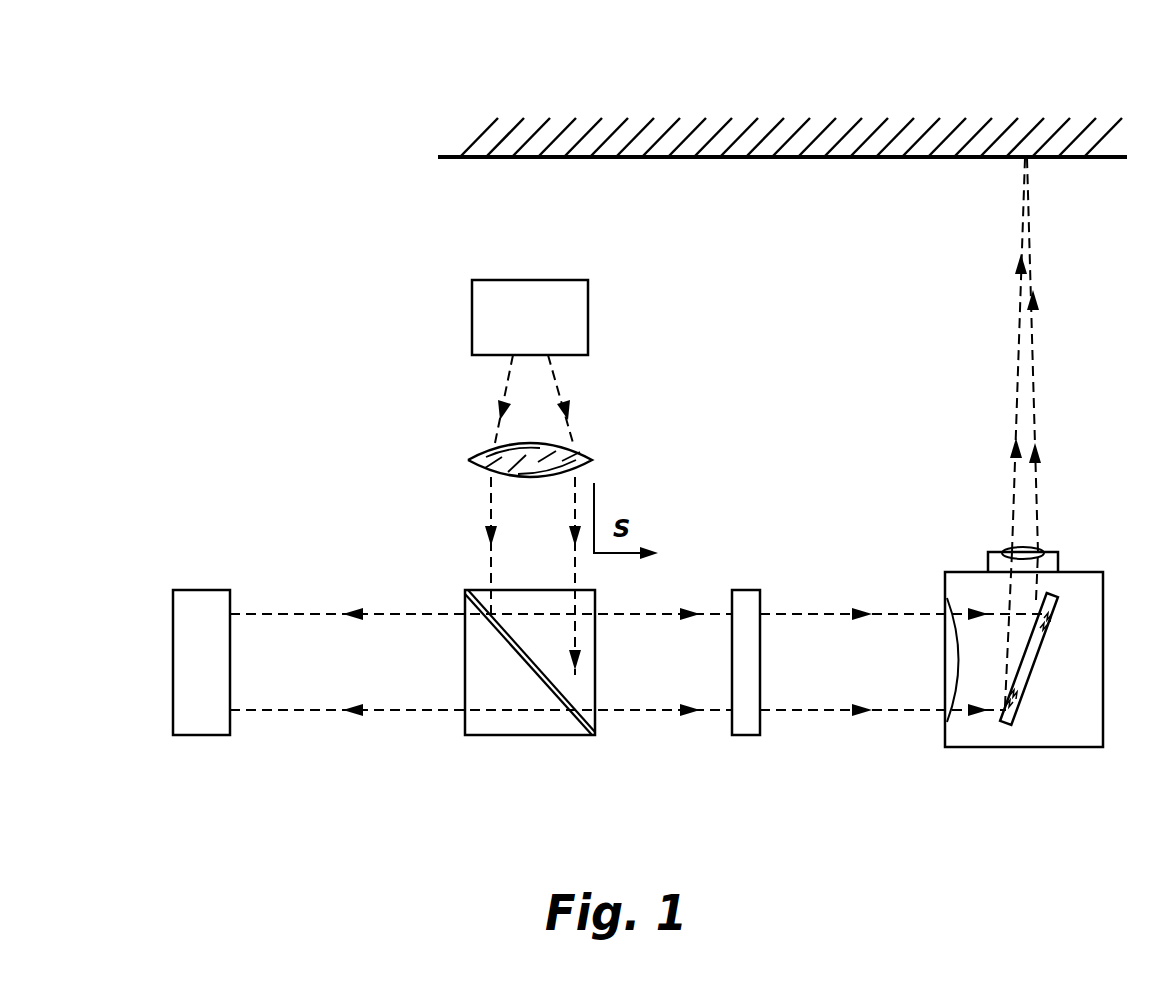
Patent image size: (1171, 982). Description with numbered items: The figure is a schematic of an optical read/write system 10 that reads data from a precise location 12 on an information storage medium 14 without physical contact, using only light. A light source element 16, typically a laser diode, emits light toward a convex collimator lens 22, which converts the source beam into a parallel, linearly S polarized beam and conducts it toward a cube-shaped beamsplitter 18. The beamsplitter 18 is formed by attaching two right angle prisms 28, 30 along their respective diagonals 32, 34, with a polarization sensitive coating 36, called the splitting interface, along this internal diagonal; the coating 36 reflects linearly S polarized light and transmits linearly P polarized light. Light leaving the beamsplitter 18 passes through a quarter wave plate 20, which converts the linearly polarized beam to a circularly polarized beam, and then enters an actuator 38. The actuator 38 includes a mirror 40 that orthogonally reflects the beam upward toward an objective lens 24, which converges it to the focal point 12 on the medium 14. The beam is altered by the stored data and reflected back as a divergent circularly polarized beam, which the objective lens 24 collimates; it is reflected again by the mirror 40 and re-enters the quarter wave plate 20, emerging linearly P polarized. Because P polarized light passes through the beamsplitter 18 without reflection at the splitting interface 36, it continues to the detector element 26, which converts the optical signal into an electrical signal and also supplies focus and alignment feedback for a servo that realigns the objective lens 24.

The optical read/write system 10 is at (260, 813).
The precise location 12 is at (1027, 160).
The information storage medium 14 is at (1050, 128).
The light source element 16 is at (537, 279).
The cube-shaped beamsplitter 18 is at (452, 597).
The quarter wave plate 20 is at (748, 589).
The collimator lens 22 is at (585, 450).
The objective lens 24 is at (1060, 553).
The detector element 26 is at (200, 589).
The right angle prism 28 is at (508, 678).
The right angle prism 30 is at (562, 648).
The diagonal 32 is at (562, 700).
The diagonal 34 is at (570, 700).
The polarization sensitive coating 36 is at (535, 675).
The actuator 38 is at (1104, 630).
The mirror 40 is at (1018, 713).